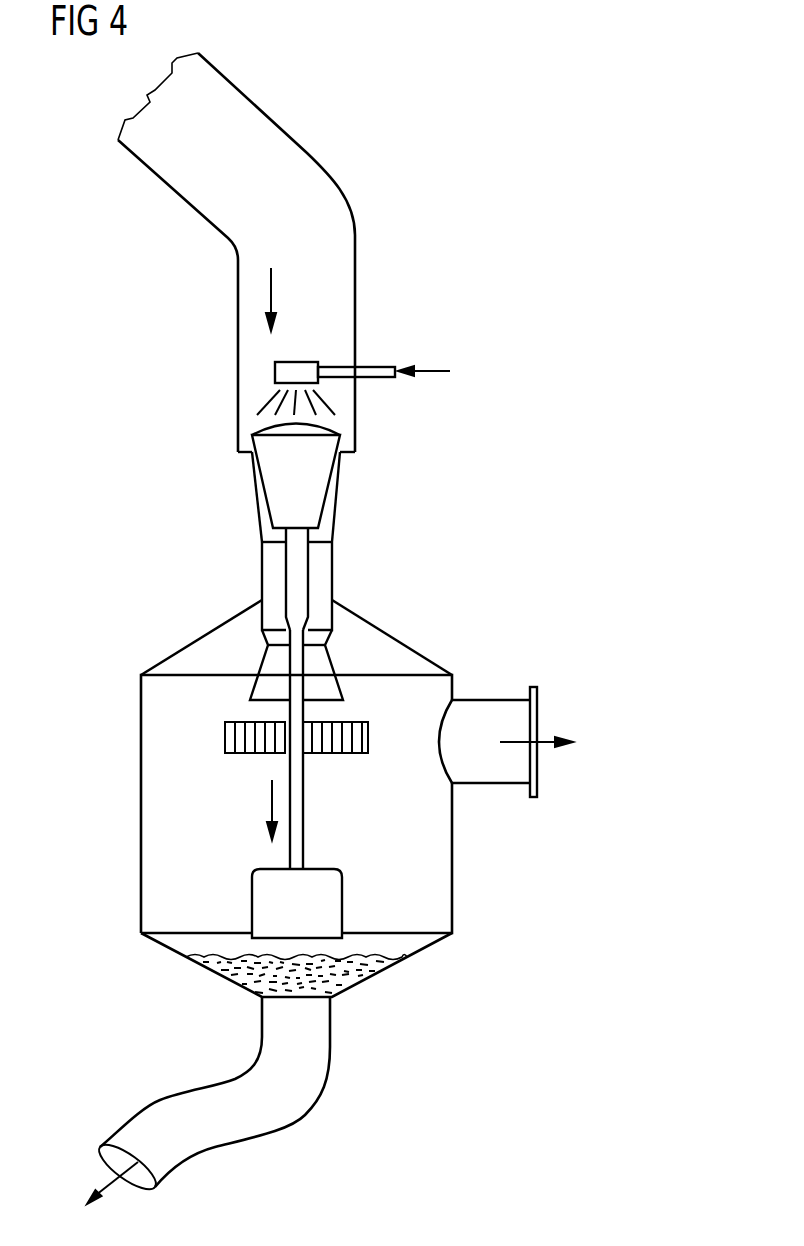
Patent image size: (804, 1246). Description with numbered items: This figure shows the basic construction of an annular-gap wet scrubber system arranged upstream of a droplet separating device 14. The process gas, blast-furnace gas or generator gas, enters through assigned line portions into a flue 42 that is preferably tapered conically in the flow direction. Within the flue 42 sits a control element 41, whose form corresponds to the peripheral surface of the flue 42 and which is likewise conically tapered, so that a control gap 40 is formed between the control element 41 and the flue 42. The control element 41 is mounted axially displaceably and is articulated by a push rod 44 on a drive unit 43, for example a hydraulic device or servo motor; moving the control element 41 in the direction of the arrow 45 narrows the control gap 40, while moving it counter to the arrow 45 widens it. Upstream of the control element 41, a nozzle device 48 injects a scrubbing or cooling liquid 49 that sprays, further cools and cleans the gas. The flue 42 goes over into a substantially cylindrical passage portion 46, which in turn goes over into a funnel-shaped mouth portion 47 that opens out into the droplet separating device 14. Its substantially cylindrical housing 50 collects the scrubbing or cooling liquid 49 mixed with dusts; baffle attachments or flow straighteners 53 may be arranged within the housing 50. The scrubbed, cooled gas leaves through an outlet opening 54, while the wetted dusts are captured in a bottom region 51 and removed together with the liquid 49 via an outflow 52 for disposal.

The droplet separating device 14 is at (106, 684).
The control gap 40 is at (304, 488).
The control element 41 is at (273, 482).
The flue 42 is at (264, 513).
The drive unit 43 is at (330, 902).
The push rod 44 is at (297, 813).
The arrow 45 is at (270, 803).
The cylindrical passage portion 46 is at (270, 577).
The mouth portion 47 is at (320, 668).
The nozzle device 48 is at (283, 372).
The scrubbing or cooling liquid 49 is at (273, 407).
The housing 50 is at (152, 799).
The bottom region 51 is at (193, 948).
The outflow 52 is at (288, 1000).
The baffle attachments or flow straighteners 53 is at (350, 738).
The outlet opening 54 is at (487, 773).